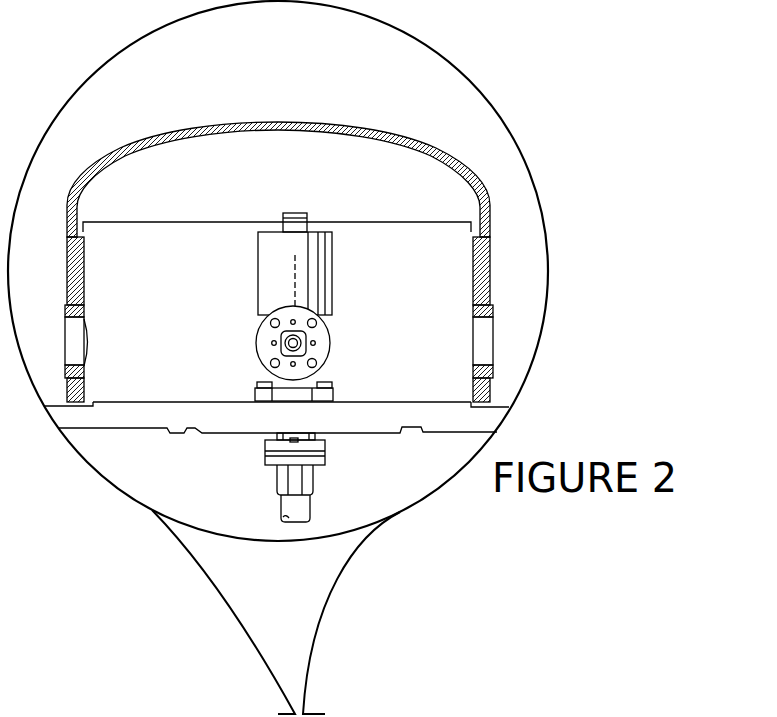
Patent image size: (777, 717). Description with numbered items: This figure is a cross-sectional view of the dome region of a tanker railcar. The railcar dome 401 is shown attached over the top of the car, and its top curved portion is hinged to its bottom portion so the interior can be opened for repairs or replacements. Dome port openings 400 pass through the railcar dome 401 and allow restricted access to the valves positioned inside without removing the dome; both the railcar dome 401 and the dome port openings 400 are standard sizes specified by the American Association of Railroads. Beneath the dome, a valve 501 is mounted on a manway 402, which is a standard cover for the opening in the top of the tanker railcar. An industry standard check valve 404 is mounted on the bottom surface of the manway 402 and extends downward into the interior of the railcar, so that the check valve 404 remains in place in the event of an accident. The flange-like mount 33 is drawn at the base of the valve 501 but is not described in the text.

The railcar dome 401 is at (240, 122).
The dome port openings 400 is at (485, 342).
The manway 402 is at (230, 433).
The valve 501 is at (422, 262).
The flange 33 is at (332, 343).
The check valve 404 is at (317, 469).